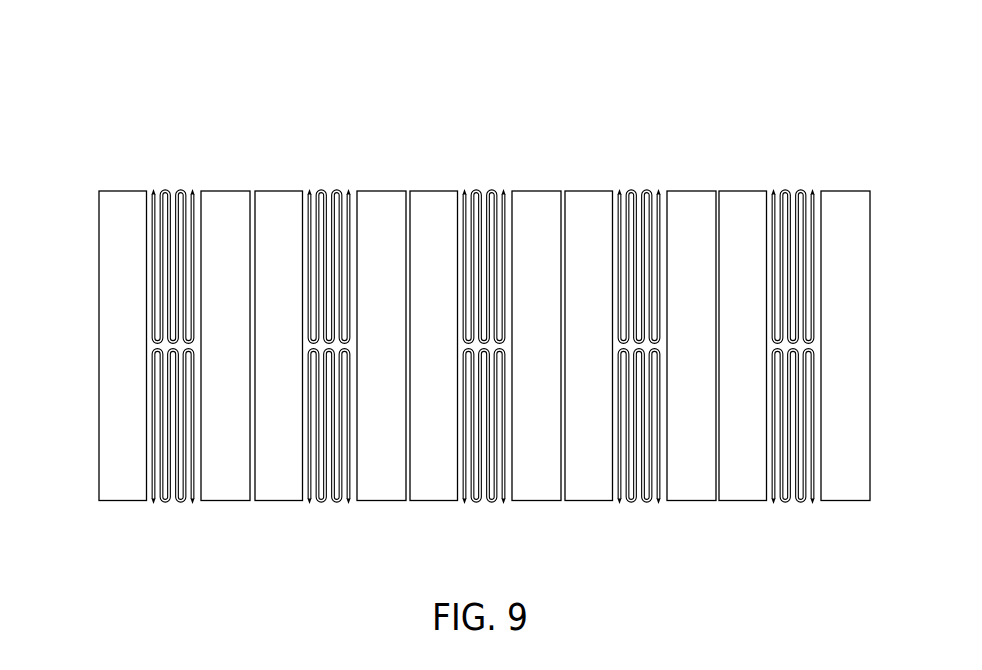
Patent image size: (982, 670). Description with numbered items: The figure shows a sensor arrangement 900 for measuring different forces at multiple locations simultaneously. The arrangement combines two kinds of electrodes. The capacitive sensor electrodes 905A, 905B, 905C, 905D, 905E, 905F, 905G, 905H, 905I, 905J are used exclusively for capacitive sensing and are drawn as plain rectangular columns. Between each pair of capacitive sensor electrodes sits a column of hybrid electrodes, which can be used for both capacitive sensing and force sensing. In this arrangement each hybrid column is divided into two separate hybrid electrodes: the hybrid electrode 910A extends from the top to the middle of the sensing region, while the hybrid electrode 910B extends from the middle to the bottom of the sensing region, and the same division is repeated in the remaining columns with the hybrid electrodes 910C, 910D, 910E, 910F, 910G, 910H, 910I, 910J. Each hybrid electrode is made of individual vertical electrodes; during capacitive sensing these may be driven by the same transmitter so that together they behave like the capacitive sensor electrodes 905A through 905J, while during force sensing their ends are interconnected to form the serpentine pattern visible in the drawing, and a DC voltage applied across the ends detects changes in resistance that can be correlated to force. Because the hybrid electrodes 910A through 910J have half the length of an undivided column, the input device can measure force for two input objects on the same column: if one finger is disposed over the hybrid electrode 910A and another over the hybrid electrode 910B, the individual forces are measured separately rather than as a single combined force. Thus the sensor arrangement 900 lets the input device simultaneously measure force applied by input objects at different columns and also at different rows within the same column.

The sensor arrangement 900 is at (724, 47).
The capacitive sensor electrode 905A is at (124, 191).
The capacitive sensor electrode 905B is at (228, 191).
The capacitive sensor electrode 905C is at (278, 191).
The capacitive sensor electrode 905D is at (384, 191).
The capacitive sensor electrode 905E is at (433, 191).
The capacitive sensor electrode 905F is at (539, 191).
The capacitive sensor electrode 905G is at (588, 191).
The capacitive sensor electrode 905H is at (694, 191).
The capacitive sensor electrode 905I is at (742, 191).
The capacitive sensor electrode 905J is at (848, 191).
The hybrid electrode 910A is at (174, 217).
The hybrid electrode 910B is at (174, 448).
The hybrid electrode 910C is at (330, 244).
The hybrid electrode 910D is at (330, 448).
The hybrid electrode 910E is at (485, 244).
The hybrid electrode 910F is at (485, 448).
The hybrid electrode 910G is at (640, 244).
The hybrid electrode 910H is at (640, 448).
The hybrid electrode 910I is at (794, 244).
The hybrid electrode 910J is at (794, 448).